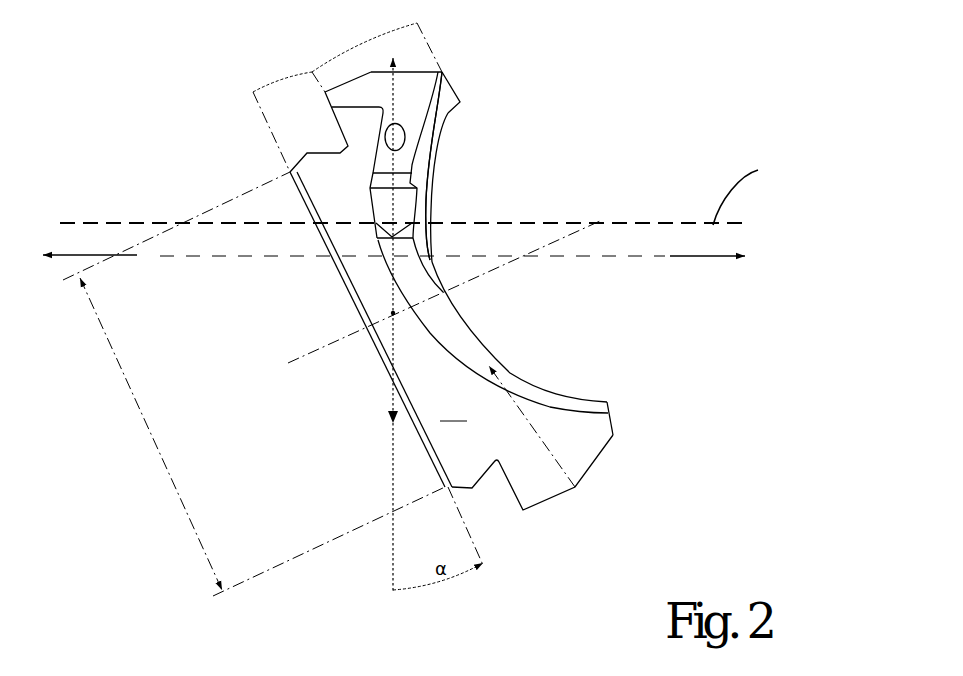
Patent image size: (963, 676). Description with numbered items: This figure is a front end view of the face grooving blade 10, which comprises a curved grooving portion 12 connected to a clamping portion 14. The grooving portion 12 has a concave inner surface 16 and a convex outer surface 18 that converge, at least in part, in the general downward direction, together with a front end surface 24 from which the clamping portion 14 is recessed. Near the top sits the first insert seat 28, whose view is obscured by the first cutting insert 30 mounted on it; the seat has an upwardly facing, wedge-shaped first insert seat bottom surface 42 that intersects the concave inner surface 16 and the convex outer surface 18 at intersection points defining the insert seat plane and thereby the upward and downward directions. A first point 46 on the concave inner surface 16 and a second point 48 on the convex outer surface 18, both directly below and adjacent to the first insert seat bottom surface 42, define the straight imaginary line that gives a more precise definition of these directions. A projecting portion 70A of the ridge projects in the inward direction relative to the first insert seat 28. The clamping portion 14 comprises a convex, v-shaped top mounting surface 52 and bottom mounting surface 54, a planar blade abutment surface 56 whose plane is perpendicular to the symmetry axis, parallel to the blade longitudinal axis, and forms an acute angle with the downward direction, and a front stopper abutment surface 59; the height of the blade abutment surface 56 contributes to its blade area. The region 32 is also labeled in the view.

The face grooving blade 10 is at (208, 102).
The grooving portion 12 is at (377, 51).
The clamping portion 14 is at (282, 74).
The concave inner surface 16 is at (599, 394).
The convex outer surface 18 is at (592, 419).
The front end surface 24 is at (578, 488).
The first insert seat 28 is at (426, 203).
The first cutting insert 30 is at (434, 166).
The shank 32 is at (415, 176).
The first insert seat bottom surface 42 is at (390, 232).
The first point 46 is at (429, 252).
The second point 48 is at (378, 248).
The top mounting surface 52 is at (304, 146).
The bottom mounting surface 54 is at (477, 494).
The blade abutment surface 56 is at (367, 332).
The front stopper abutment surface 59 is at (453, 410).
The projecting portion 70A is at (453, 110).